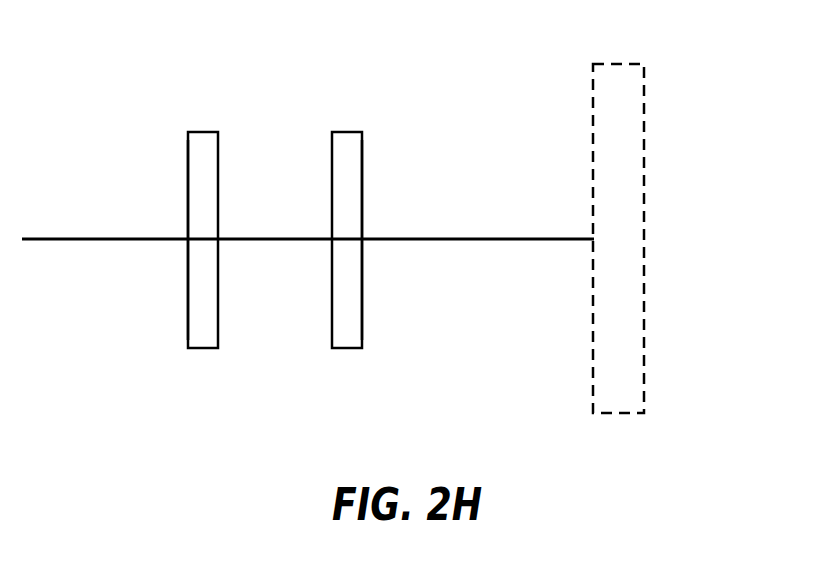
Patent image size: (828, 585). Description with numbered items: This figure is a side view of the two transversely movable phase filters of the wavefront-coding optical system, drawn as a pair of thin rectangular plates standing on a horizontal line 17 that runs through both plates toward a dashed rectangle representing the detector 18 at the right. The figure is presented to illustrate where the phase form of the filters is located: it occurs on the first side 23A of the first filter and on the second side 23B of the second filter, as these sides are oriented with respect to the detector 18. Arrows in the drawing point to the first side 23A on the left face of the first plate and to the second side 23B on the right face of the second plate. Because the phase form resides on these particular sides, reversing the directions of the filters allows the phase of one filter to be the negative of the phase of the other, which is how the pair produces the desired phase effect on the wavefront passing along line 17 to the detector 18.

The optical axis 17 is at (497, 241).
The detector 18 is at (623, 393).
The first side 23A is at (183, 313).
The second side 23B is at (372, 314).